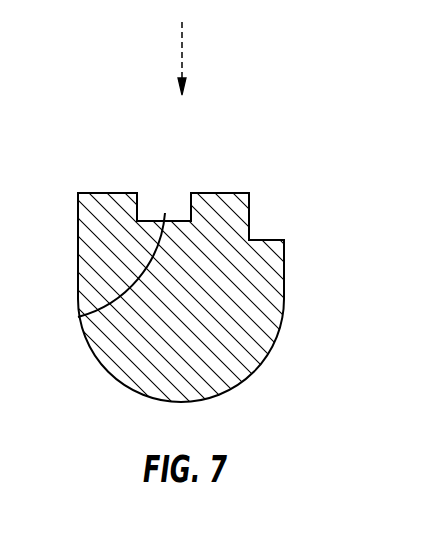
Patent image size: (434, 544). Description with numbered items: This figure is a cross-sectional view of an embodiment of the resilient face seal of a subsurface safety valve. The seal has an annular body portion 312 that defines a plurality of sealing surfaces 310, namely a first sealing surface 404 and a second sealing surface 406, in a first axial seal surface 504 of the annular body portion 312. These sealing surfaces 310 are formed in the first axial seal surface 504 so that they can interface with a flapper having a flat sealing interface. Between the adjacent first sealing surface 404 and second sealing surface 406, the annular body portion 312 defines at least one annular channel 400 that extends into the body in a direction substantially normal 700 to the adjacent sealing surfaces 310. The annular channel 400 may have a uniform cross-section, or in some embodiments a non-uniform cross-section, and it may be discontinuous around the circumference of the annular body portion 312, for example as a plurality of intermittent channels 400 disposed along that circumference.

The direction substantially normal 700 is at (182, 59).
The first axial seal surface 504 is at (163, 190).
The first sealing surface 404 is at (126, 192).
The second sealing surface 406 is at (205, 193).
The plurality of sealing surfaces 310 is at (97, 192).
The annular channel 400 is at (78, 317).
The annular body portion 312 is at (275, 302).